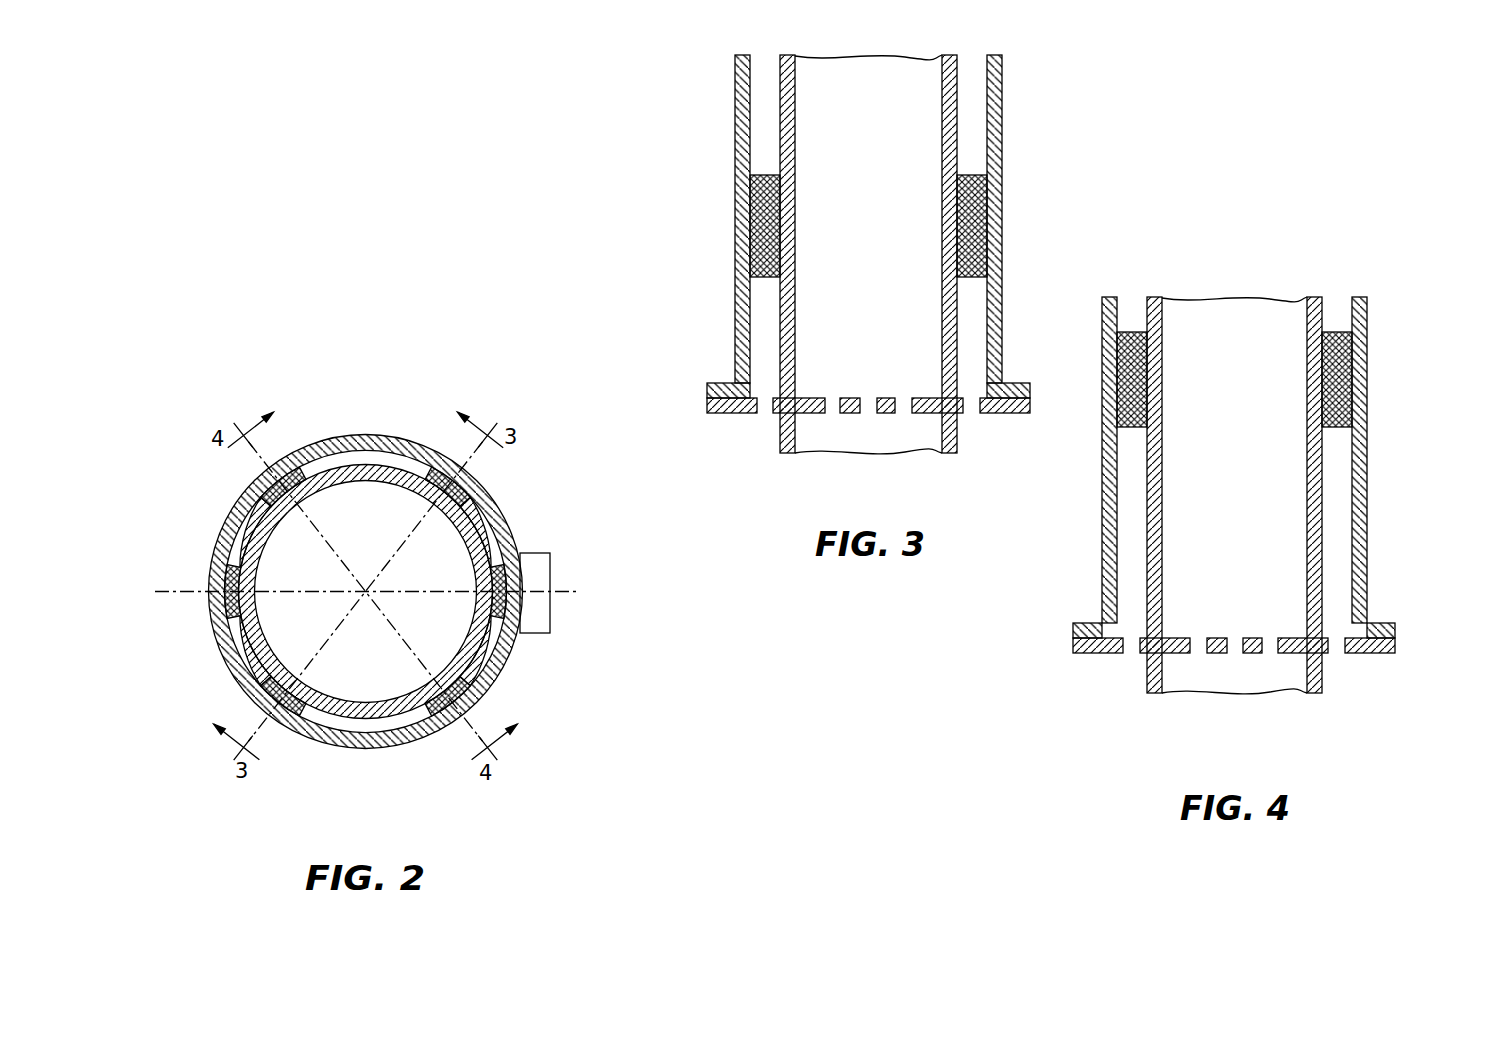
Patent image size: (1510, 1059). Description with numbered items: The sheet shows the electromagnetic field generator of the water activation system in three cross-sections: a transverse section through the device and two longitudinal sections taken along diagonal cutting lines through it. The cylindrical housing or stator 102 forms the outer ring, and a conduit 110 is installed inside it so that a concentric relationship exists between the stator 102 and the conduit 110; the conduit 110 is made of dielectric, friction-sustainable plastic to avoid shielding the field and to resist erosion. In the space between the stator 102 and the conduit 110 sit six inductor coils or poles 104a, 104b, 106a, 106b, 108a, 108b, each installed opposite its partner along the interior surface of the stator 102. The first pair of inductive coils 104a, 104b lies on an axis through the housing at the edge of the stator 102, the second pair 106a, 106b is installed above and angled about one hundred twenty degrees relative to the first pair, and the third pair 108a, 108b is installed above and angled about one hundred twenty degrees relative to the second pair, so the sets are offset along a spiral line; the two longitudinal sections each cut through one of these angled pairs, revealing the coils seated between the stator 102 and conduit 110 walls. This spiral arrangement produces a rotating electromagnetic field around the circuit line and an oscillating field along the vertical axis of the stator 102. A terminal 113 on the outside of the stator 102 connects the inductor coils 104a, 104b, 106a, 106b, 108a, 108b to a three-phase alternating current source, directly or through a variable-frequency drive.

In FIG. 2, the cylindrical housing or stator 102 is at (208, 597).
In FIG. 3, the cylindrical housing or stator 102 is at (743, 93).
In FIG. 4, the cylindrical housing or stator 102 is at (1107, 455).
In FIG. 2, the conduit 110 is at (250, 634).
In FIG. 3, the conduit 110 is at (787, 90).
In FIG. 4, the conduit 110 is at (1153, 490).
In FIG. 2, the inductor coil 104a is at (222, 568).
In FIG. 2, the inductor coil 104b is at (522, 556).
In FIG. 2, the inductor coil 106a is at (300, 723).
In FIG. 3, the inductor coil 106a is at (752, 213).
In FIG. 2, the inductor coil 106b is at (440, 462).
In FIG. 3, the inductor coil 106b is at (988, 204).
In FIG. 2, the inductor coil 108a is at (303, 452).
In FIG. 4, the inductor coil 108a is at (1127, 337).
In FIG. 2, the inductor coil 108b is at (487, 668).
In FIG. 4, the inductor coil 108b is at (1337, 403).
In FIG. 2, the terminal 113 is at (538, 580).